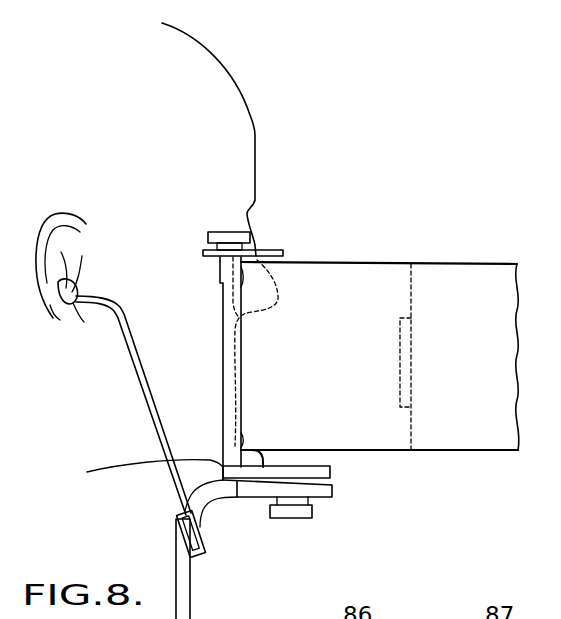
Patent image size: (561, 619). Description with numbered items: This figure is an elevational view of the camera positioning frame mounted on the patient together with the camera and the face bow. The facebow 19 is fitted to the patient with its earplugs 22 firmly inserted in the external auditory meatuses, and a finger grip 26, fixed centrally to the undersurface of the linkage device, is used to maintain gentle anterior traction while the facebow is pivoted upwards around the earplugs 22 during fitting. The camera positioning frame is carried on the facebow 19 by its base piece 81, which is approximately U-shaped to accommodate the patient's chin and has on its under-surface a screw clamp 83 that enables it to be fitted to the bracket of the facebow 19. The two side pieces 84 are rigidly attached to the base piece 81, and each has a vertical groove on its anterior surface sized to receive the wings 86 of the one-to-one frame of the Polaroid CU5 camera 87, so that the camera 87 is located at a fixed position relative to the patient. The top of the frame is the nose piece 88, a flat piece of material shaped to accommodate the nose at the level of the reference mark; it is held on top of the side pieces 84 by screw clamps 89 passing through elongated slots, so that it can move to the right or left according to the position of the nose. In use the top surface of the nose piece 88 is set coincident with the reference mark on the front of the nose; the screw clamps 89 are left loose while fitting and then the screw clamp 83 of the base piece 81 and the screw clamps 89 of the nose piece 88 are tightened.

The facebow 19 is at (167, 478).
The earplugs 22 is at (76, 292).
The finger grip 26 is at (190, 584).
The base piece 81 is at (323, 478).
The screw clamp 83 is at (305, 518).
The side pieces 84 is at (242, 366).
The wings 86 is at (372, 288).
The camera 87 is at (472, 282).
The nose piece 88 is at (272, 253).
The screw clamps 89 is at (253, 240).